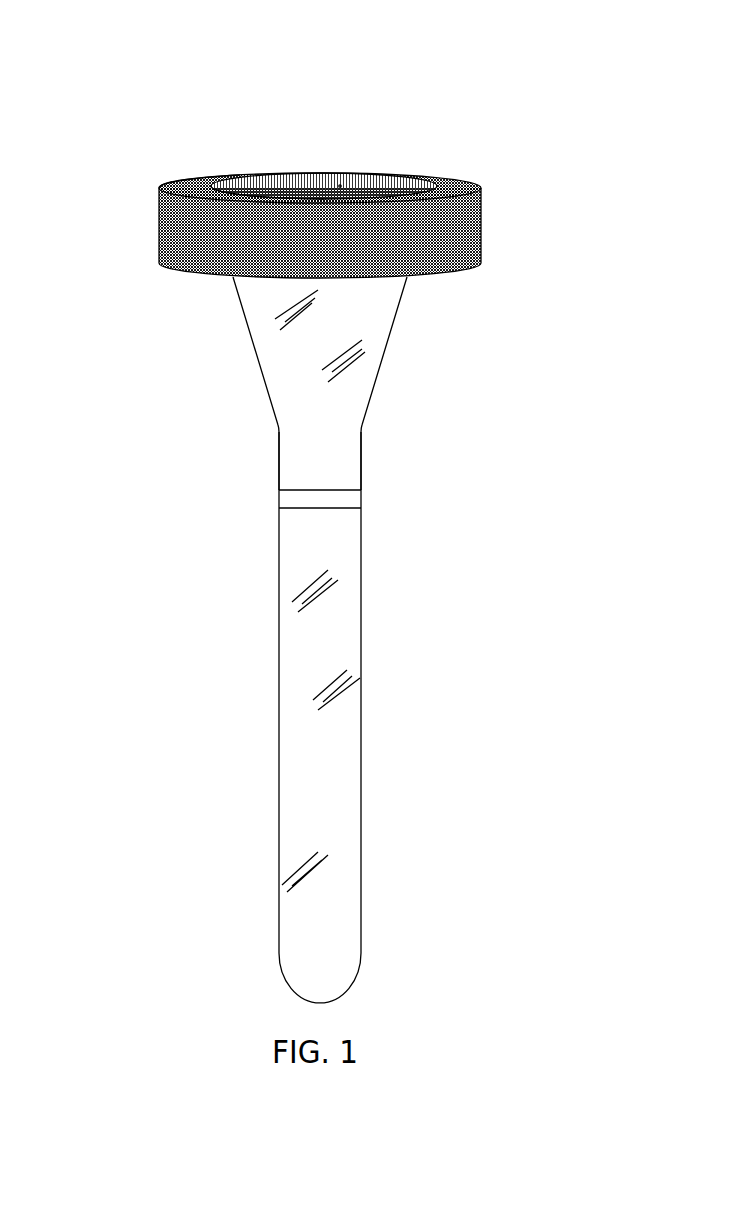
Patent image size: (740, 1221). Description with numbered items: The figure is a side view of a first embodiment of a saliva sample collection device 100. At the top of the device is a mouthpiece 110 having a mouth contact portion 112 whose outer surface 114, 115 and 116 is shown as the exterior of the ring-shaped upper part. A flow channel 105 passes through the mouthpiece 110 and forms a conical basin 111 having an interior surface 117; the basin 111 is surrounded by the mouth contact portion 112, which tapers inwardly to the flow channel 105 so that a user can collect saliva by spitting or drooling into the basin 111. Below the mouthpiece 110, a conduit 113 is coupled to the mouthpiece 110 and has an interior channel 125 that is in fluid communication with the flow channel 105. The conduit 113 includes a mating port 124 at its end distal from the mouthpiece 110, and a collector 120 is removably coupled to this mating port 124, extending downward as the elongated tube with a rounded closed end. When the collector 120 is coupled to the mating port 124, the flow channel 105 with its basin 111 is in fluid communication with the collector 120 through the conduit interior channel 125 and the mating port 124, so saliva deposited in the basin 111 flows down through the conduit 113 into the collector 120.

The saliva sample collection device 100 is at (104, 86).
The flow channel 105 is at (340, 187).
The mouthpiece 110 is at (327, 179).
The conical basin 111 is at (377, 178).
The mouth contact portion 112 is at (463, 180).
The conduit 113 is at (374, 420).
The outer surface 114 is at (193, 278).
The outer surface 115 is at (157, 227).
The outer surface 116 is at (173, 180).
The interior surface 117 is at (313, 185).
The collector 120 is at (323, 717).
The mating port 124 is at (365, 496).
The interior channel 125 is at (298, 468).